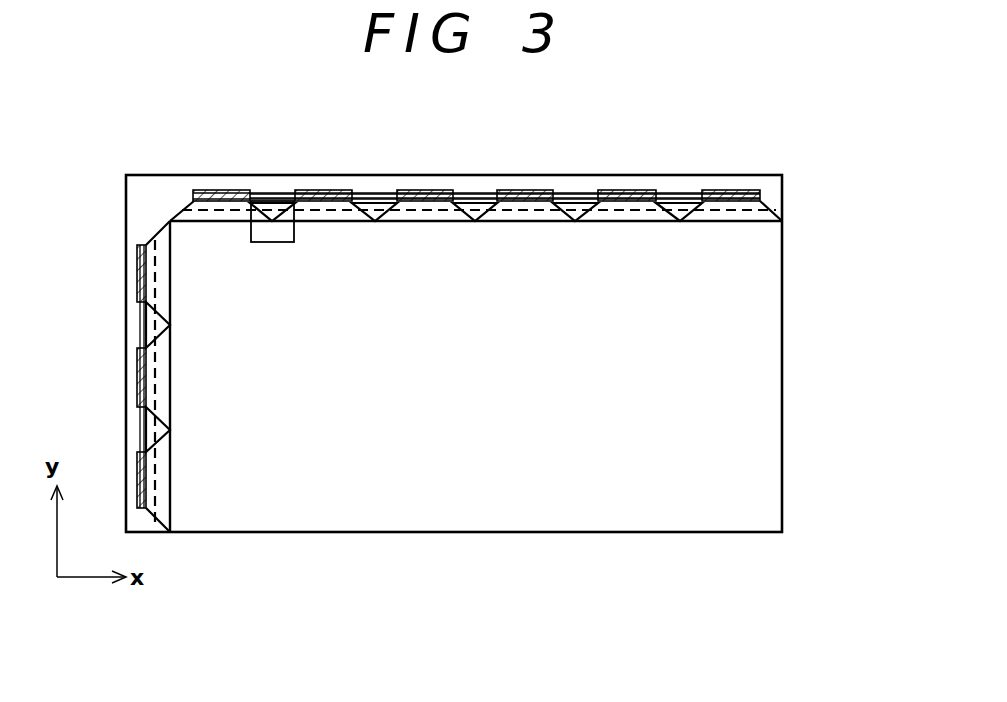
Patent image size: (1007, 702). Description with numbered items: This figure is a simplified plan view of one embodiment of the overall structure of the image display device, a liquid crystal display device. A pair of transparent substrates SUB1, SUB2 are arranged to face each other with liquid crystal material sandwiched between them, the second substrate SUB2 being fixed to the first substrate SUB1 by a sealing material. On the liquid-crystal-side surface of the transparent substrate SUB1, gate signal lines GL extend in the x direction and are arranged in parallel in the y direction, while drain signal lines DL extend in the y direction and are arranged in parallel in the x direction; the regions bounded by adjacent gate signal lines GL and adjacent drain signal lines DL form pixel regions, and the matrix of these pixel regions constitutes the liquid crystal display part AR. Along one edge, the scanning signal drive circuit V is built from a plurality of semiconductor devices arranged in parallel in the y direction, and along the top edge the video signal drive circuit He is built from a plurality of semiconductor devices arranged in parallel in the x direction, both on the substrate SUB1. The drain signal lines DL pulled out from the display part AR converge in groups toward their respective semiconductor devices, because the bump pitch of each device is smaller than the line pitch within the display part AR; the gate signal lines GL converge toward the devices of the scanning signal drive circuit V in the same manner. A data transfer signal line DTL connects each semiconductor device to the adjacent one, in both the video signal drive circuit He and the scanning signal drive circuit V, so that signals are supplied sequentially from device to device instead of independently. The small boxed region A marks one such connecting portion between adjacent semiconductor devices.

The transparent substrate SUB1 is at (777, 191).
The transparent substrate SUB2 is at (777, 397).
The liquid crystal display part AR is at (476, 376).
The video signal drive circuit He is at (733, 196).
The scanning signal drive circuit V is at (137, 271).
The drain signal line DL is at (318, 208).
The gate signal line GL is at (137, 291).
The data transfer signal line DTL is at (371, 193).
The enlarged region A is at (272, 246).